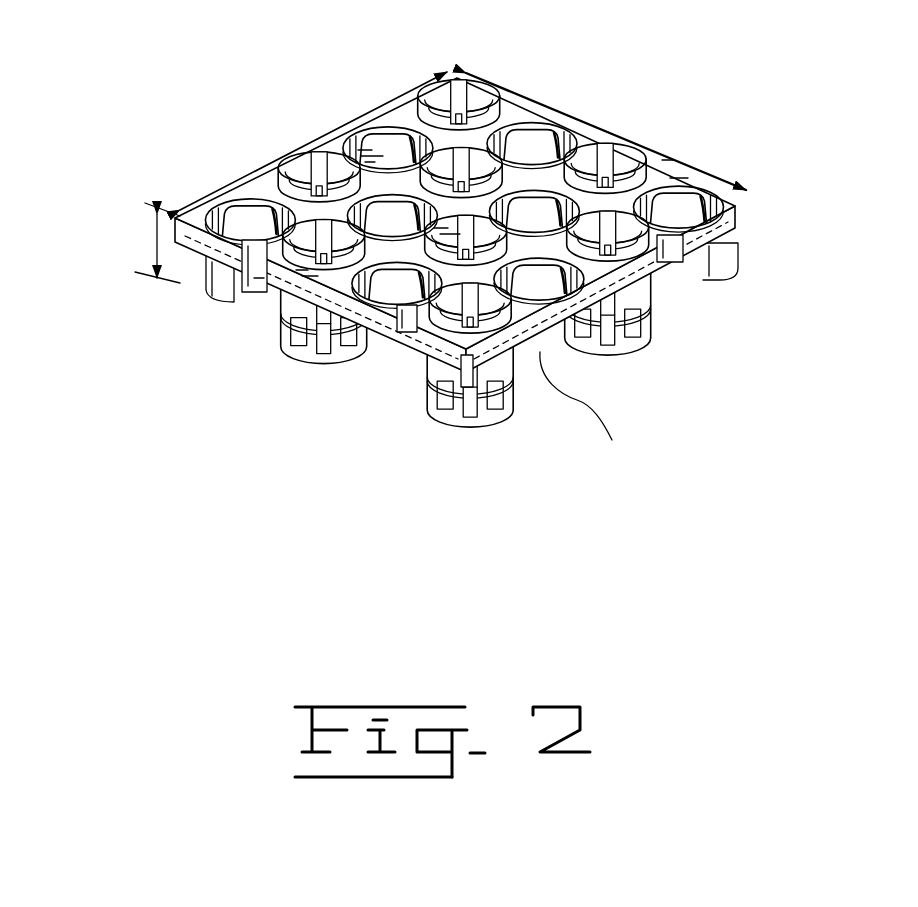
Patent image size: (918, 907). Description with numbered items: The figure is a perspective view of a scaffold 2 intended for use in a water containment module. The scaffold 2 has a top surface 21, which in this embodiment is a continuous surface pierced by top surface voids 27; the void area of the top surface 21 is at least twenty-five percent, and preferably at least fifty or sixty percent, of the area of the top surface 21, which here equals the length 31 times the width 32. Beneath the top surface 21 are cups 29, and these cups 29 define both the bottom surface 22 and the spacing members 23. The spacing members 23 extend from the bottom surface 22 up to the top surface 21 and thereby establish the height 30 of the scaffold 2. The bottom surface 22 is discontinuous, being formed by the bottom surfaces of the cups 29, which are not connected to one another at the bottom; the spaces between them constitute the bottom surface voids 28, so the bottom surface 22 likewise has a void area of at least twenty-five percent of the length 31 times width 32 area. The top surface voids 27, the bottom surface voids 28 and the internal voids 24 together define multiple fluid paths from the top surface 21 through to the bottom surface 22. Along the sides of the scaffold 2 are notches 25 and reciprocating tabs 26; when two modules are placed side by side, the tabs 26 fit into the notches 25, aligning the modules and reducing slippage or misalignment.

The scaffold 2 is at (262, 143).
The top surface 21 is at (386, 180).
The bottom surface 22 is at (342, 374).
The spacing members 23 is at (290, 318).
The internal voids 24 is at (389, 367).
The notches 25 is at (399, 332).
The tabs 26 is at (254, 292).
The top surface voids 27 is at (570, 175).
The bottom surface voids 28 is at (218, 288).
The cups 29 is at (308, 320).
The height 30 is at (153, 246).
The length 31 is at (313, 140).
The width 32 is at (577, 165).